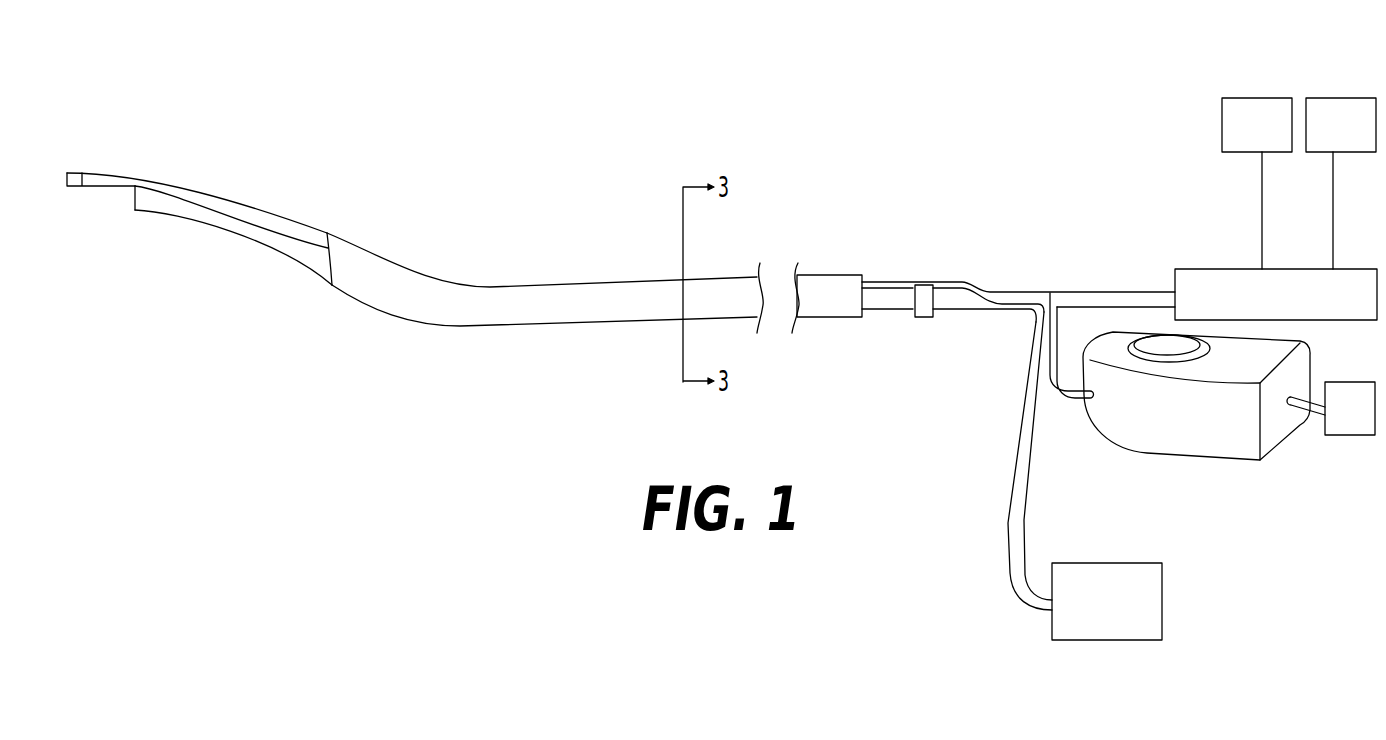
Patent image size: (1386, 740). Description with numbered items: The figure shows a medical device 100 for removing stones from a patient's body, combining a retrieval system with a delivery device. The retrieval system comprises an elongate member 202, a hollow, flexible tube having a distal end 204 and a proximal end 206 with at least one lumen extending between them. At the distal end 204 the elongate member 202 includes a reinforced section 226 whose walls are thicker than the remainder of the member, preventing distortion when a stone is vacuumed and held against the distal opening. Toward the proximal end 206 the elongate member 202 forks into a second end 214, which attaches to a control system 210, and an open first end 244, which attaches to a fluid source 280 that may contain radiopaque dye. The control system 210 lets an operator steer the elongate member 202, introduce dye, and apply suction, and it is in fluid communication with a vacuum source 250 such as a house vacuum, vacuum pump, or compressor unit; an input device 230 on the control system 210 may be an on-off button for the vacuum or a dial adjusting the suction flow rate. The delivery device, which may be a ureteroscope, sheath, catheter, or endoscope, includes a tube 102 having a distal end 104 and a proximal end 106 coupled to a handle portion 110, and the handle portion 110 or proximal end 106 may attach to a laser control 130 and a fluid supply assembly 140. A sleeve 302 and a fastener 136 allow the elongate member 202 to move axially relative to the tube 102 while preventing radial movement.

The medical device 100 is at (978, 200).
The tube 102 is at (232, 231).
The distal end 104 is at (138, 212).
The proximal end 106 is at (1172, 291).
The handle portion 110 is at (1215, 269).
The laser control 130 is at (1247, 98).
The fastener 136 is at (927, 318).
The fluid supply assembly 140 is at (1331, 98).
The elongate member 202 is at (277, 214).
The distal end 204 is at (68, 187).
The proximal end 206 is at (1193, 439).
The control system 210 is at (1153, 455).
The second end 214 is at (1049, 393).
The reinforced section 226 is at (71, 172).
The input device 230 is at (1168, 362).
The first end 244 is at (1036, 332).
The vacuum source 250 is at (1353, 436).
The fluid source 280 is at (1162, 595).
The sleeve 302 is at (555, 283).